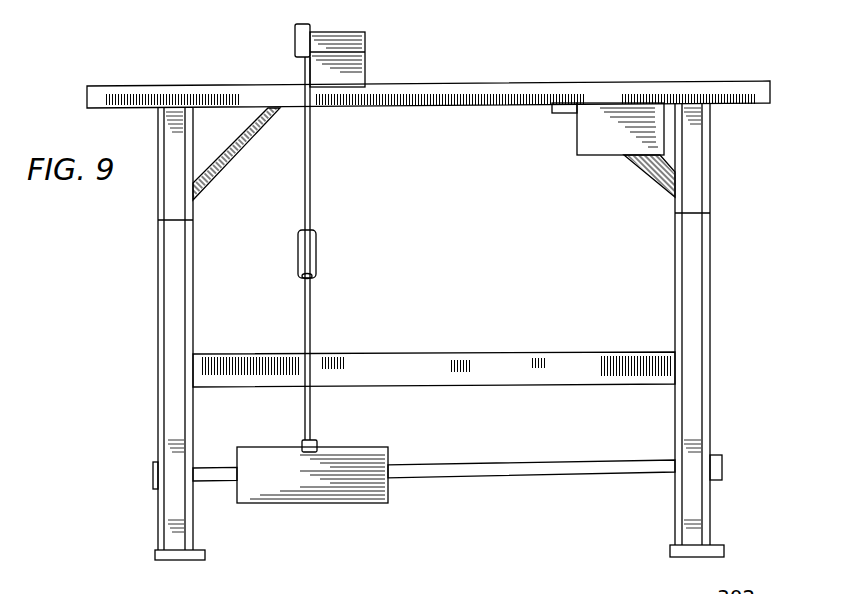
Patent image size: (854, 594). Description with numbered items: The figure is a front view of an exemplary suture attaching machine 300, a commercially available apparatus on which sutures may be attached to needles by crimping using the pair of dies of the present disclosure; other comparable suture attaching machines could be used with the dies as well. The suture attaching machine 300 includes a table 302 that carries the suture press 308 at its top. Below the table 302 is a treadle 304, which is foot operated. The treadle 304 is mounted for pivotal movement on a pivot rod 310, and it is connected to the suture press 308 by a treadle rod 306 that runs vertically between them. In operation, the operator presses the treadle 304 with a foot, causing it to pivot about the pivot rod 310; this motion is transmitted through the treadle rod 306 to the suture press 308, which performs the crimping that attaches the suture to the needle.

The suture attaching machine 300 is at (134, 315).
The table 302 is at (582, 85).
The treadle 304 is at (297, 478).
The treadle rod 306 is at (310, 200).
The suture press 308 is at (380, 41).
The pivot rod 310 is at (499, 468).